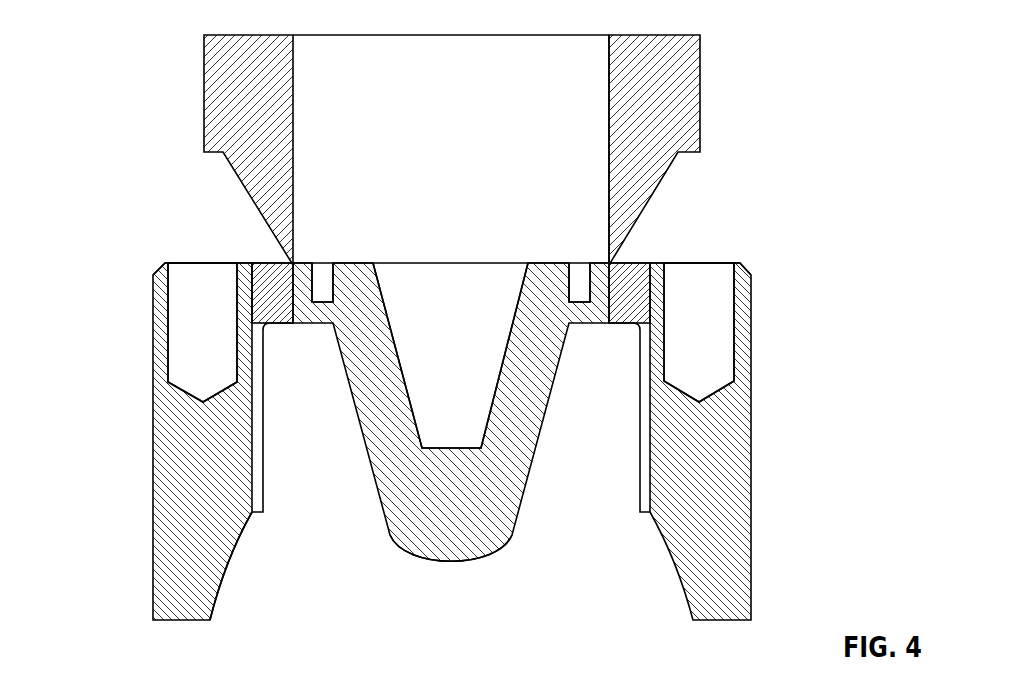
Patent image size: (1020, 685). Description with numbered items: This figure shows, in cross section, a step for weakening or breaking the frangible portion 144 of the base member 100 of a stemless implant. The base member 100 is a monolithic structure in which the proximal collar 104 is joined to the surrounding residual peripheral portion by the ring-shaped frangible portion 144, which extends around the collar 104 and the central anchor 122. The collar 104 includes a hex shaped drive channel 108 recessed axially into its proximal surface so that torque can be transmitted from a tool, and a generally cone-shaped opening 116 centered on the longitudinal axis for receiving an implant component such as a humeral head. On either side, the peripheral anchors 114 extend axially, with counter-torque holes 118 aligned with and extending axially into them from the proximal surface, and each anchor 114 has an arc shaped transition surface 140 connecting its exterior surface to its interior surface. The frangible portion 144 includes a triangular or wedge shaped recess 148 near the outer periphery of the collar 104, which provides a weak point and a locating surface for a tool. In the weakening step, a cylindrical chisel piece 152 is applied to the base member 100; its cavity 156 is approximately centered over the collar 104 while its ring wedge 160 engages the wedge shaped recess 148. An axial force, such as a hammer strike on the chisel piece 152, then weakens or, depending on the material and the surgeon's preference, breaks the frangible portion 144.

The base member 100 is at (126, 50).
The proximal collar 104 is at (440, 263).
The drive channel 108 is at (322, 263).
The peripheral anchor 114 is at (153, 405).
The opening 116 is at (376, 263).
The counter-torque hole 118 is at (173, 263).
The central anchor 122 is at (483, 553).
The arc shaped transition surface 140 is at (236, 551).
The frangible portion 144 is at (268, 263).
The wedge shaped recess 148 is at (633, 262).
The chisel piece 152 is at (700, 62).
The cavity 156 is at (452, 112).
The ring wedge 160 is at (608, 233).